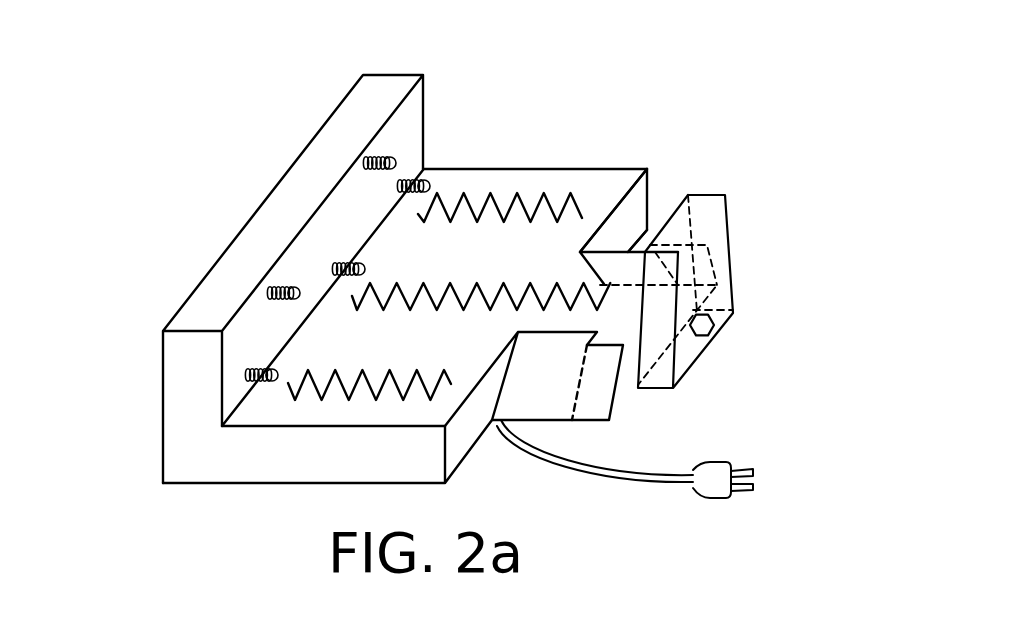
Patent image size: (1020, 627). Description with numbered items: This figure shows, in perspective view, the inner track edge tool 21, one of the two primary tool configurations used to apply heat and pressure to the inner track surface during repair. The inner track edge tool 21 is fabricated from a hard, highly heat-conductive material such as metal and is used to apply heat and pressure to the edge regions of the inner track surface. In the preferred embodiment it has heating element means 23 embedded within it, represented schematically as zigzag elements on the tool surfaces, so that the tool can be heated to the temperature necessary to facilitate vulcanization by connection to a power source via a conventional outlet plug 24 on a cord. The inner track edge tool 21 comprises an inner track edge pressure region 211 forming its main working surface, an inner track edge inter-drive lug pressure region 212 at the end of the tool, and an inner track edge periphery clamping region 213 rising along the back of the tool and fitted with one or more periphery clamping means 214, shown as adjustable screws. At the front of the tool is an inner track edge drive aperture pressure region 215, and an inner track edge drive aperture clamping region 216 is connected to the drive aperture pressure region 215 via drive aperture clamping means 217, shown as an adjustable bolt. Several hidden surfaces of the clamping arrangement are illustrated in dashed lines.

The inner track edge tool 21 is at (490, 273).
The inner track edge pressure region 211 is at (560, 180).
The inner track edge inter-drive lug pressure region 212 is at (578, 277).
The inner track edge periphery clamping region 213 is at (300, 187).
The periphery clamping means 214 is at (398, 156).
The inner track edge drive aperture pressure region 215 is at (626, 317).
The inner track edge drive aperture clamping region 216 is at (697, 208).
The drive aperture clamping means 217 is at (714, 326).
The heating element means 23 is at (420, 215).
The outlet plug 24 is at (717, 462).